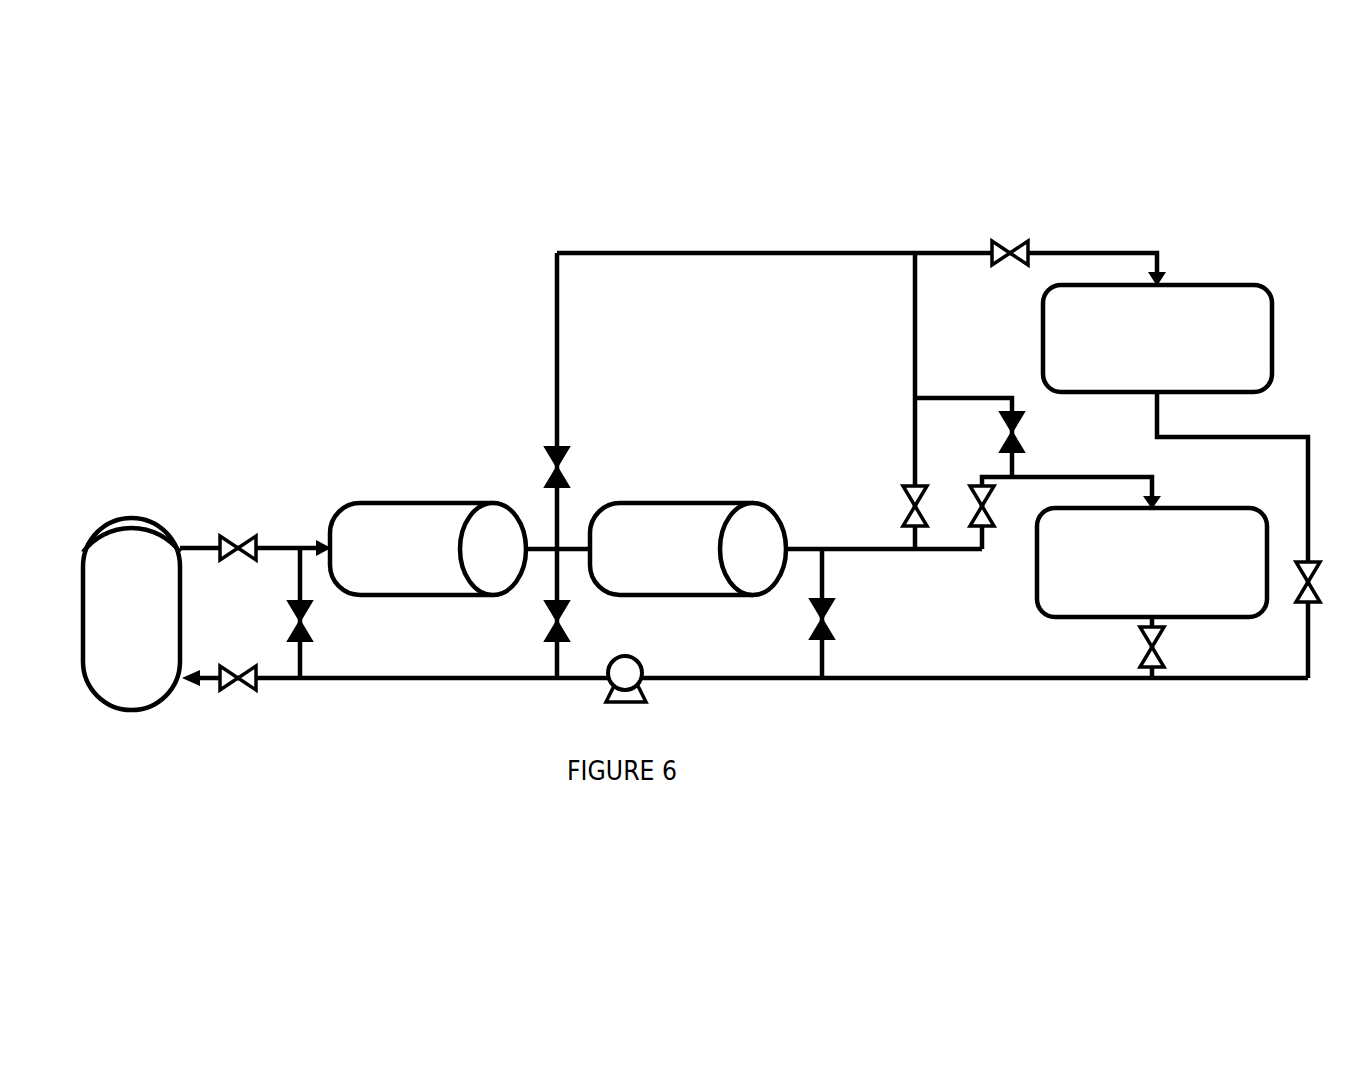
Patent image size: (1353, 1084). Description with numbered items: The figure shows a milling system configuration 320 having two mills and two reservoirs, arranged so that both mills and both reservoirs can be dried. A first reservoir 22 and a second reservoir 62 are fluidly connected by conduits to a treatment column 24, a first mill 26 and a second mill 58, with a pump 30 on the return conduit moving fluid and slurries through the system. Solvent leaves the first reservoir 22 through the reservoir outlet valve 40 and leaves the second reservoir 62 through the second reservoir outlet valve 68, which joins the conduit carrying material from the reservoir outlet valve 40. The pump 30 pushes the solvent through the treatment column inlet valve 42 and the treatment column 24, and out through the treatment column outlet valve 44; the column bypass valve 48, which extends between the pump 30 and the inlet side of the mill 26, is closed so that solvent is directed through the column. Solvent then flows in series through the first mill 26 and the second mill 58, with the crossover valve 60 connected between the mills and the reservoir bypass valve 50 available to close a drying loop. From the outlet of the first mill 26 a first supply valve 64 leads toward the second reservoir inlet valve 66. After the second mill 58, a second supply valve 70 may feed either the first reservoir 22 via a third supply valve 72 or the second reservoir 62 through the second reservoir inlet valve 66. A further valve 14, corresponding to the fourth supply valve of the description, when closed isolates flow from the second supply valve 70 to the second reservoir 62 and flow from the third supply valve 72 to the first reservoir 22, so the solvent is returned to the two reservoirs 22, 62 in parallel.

The system configuration 320 is at (773, 384).
The treatment column 24 is at (172, 636).
The treatment column outlet valve 44 is at (238, 538).
The column bypass valve 48 is at (312, 630).
The treatment column inlet valve 42 is at (242, 688).
The mill 26 is at (452, 515).
The second mill 58 is at (712, 518).
The first supply valve 64 is at (572, 463).
The crossover valve 60 is at (567, 634).
The reservoir bypass valve 50 is at (836, 628).
The pump 30 is at (648, 704).
The second supply valve 70 is at (910, 505).
The third supply valve 72 is at (996, 512).
The valve 14 is at (1020, 441).
The second reservoir inlet valve 66 is at (1020, 262).
The second reservoir 62 is at (1218, 305).
The reservoir 22 is at (1097, 603).
The reservoir outlet valve 40 is at (1166, 652).
The second reservoir outlet valve 68 is at (1300, 562).